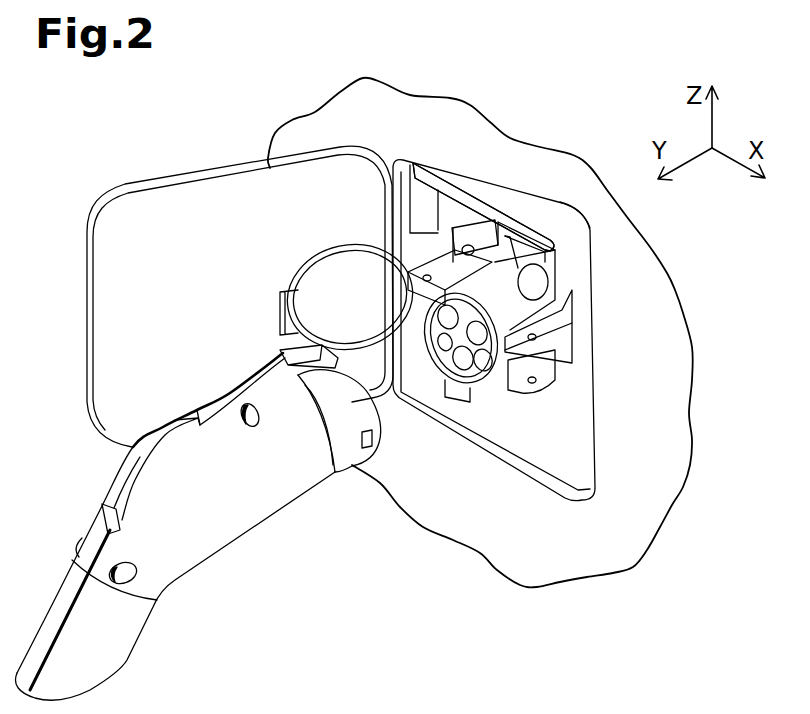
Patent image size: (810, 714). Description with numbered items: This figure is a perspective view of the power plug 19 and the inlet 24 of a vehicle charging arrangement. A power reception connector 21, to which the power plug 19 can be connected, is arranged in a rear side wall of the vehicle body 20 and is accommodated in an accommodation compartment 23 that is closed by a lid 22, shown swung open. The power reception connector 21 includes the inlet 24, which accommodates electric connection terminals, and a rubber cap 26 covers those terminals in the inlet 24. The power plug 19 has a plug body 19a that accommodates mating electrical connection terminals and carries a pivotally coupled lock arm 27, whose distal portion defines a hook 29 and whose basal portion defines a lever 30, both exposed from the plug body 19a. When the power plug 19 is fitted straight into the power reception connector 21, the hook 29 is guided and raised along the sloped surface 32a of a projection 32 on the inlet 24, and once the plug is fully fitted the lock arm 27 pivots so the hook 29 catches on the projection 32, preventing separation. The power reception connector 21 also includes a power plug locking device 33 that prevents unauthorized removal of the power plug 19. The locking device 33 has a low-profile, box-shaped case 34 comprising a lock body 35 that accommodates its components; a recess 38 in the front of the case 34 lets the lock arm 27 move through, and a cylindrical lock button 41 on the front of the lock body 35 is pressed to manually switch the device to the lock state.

The power plug 19 is at (298, 503).
The plug body 19a is at (245, 532).
The vehicle body 20 is at (685, 489).
The power reception connector 21 is at (573, 203).
The lid 22 is at (168, 202).
The accommodation compartment 23 is at (592, 438).
The inlet 24 is at (578, 340).
The rubber cap 26 is at (328, 277).
The lock arm 27 is at (300, 340).
The hook 29 is at (322, 375).
The lever 30 is at (130, 460).
The projection 32 is at (488, 303).
The sloped surface 32a is at (445, 268).
The power plug locking device 33 is at (533, 232).
The case 34 is at (448, 198).
The lock body 35 is at (483, 207).
The recess 38 is at (487, 217).
The lock button 41 is at (517, 240).